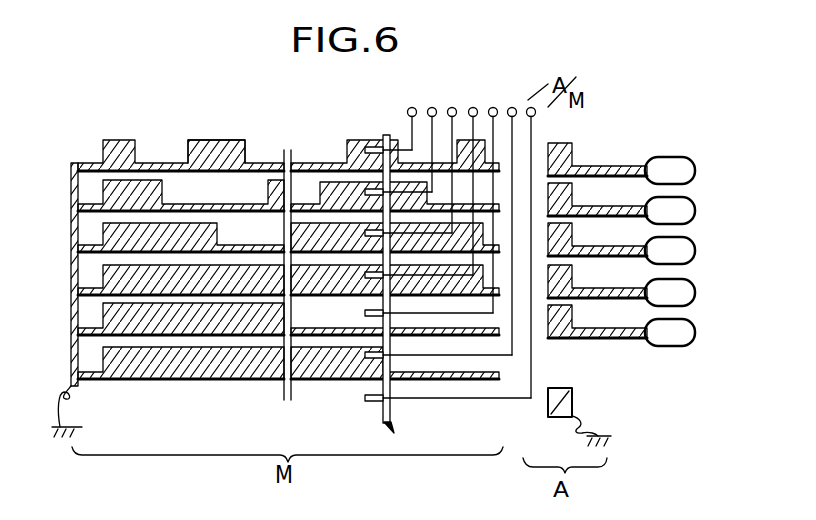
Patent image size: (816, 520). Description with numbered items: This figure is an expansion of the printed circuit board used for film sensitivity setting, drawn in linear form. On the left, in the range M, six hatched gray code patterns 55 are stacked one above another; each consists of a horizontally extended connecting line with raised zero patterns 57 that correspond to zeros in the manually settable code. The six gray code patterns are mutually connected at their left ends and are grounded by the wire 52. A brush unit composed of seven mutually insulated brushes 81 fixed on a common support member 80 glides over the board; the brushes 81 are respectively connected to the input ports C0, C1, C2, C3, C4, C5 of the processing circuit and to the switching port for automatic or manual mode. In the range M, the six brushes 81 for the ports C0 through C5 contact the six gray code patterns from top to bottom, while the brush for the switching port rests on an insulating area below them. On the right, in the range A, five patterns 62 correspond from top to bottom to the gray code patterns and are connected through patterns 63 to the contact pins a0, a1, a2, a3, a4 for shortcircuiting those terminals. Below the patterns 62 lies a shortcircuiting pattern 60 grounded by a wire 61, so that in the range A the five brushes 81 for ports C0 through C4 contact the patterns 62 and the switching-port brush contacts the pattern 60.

The wire 52 is at (68, 408).
The gray code pattern 55 is at (155, 162).
The "0" pattern 57 is at (216, 140).
The shortcircuiting pattern 60 is at (565, 383).
The wire 61 is at (584, 421).
The pattern 62 is at (559, 143).
The pattern 63 is at (608, 150).
The support member 80 is at (403, 290).
The brush 81 is at (365, 150).
The input port C0 is at (411, 107).
The input port C1 is at (431, 107).
The input port C2 is at (451, 107).
The input port C3 is at (473, 107).
The input port C4 is at (493, 107).
The input port C5 is at (513, 107).
The contact pin a0 is at (704, 158).
The contact pin a1 is at (704, 198).
The contact pin a2 is at (704, 238).
The contact pin a3 is at (704, 280).
The contact pin a4 is at (704, 320).